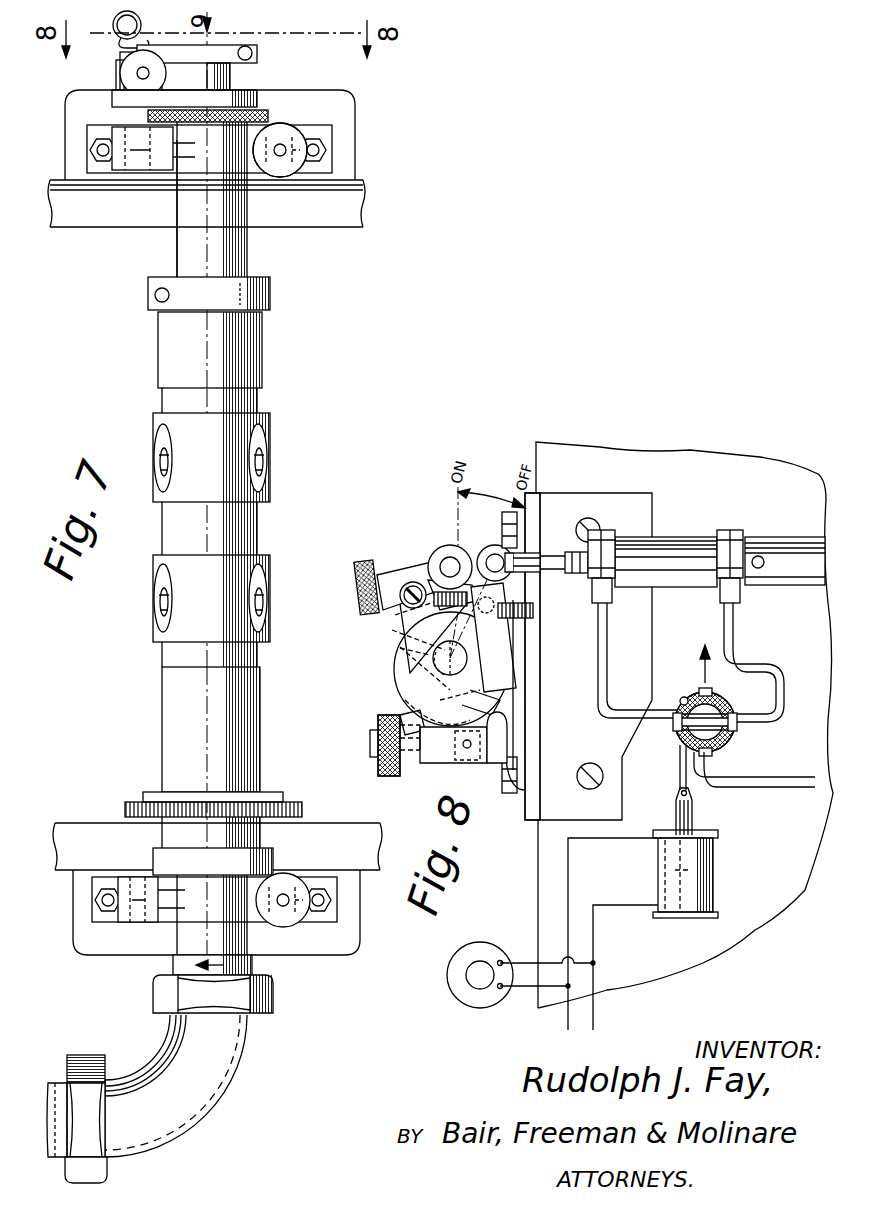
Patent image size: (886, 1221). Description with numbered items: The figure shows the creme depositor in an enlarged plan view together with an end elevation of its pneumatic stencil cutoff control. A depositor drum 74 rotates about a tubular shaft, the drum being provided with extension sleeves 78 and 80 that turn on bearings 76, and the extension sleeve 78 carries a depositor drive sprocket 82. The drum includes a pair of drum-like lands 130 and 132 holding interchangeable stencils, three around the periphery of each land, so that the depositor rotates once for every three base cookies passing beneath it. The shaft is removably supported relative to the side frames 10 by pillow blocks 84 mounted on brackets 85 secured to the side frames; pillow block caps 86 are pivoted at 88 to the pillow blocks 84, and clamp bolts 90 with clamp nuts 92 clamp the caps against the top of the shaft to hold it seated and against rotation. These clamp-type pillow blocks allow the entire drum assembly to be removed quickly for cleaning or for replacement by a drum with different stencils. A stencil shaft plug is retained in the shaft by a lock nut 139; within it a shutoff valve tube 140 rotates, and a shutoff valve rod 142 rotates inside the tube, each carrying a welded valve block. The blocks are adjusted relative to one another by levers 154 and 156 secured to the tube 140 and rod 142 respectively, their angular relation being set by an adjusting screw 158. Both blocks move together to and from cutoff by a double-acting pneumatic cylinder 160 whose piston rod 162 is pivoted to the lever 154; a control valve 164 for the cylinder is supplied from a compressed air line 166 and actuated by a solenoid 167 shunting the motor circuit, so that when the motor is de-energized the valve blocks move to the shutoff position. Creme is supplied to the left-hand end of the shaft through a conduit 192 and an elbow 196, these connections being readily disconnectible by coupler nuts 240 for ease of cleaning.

In FIG. 7, the side frames 10 is at (118, 228).
In FIG. 8, the side frames 10 is at (690, 463).
In FIG. 7, the depositor drum 74 is at (160, 531).
In FIG. 7, the bearings 76 is at (272, 296).
In FIG. 7, the extension sleeve 78 is at (173, 730).
In FIG. 7, the extension sleeve 80 is at (255, 355).
In FIG. 7, the depositor drive sprocket 82 is at (136, 803).
In FIG. 8, the pillow blocks 84 is at (512, 702).
In FIG. 7, the brackets 85 is at (78, 108).
In FIG. 8, the brackets 85 is at (620, 494).
In FIG. 7, the pillow block caps 86 is at (168, 170).
In FIG. 8, the pillow block caps 86 is at (410, 712).
In FIG. 7, the pivot 88 is at (125, 172).
In FIG. 8, the pivot 88 is at (446, 558).
In FIG. 7, the clamp bolts 90 is at (280, 160).
In FIG. 8, the clamp bolts 90 is at (370, 745).
In FIG. 7, the clamp nuts 92 is at (296, 170).
In FIG. 8, the clamp nuts 92 is at (388, 777).
In FIG. 7, the drum-like land 130 is at (153, 572).
In FIG. 7, the drum-like land 132 is at (153, 432).
In FIG. 7, the lock nut 139 is at (270, 117).
In FIG. 8, the lock nut 139 is at (490, 724).
In FIG. 8, the shutoff valve tube 140 is at (486, 665).
In FIG. 8, the shutoff valve rod 142 is at (438, 672).
In FIG. 7, the lever 154 is at (258, 95).
In FIG. 8, the lever 154 is at (540, 576).
In FIG. 7, the lever 156 is at (227, 47).
In FIG. 8, the lever 156 is at (408, 648).
In FIG. 8, the adjusting screw 158 is at (385, 576).
In FIG. 8, the double-acting pneumatic cylinder 160 is at (677, 545).
In FIG. 8, the piston rod 162 is at (575, 552).
In FIG. 8, the control valve 164 is at (693, 706).
In FIG. 8, the compressed air line 166 is at (740, 777).
In FIG. 8, the solenoid 167 is at (713, 868).
In FIG. 7, the conduit 192 is at (66, 1080).
In FIG. 7, the elbow 196 is at (212, 1116).
In FIG. 7, the coupler nuts 240 is at (153, 1010).